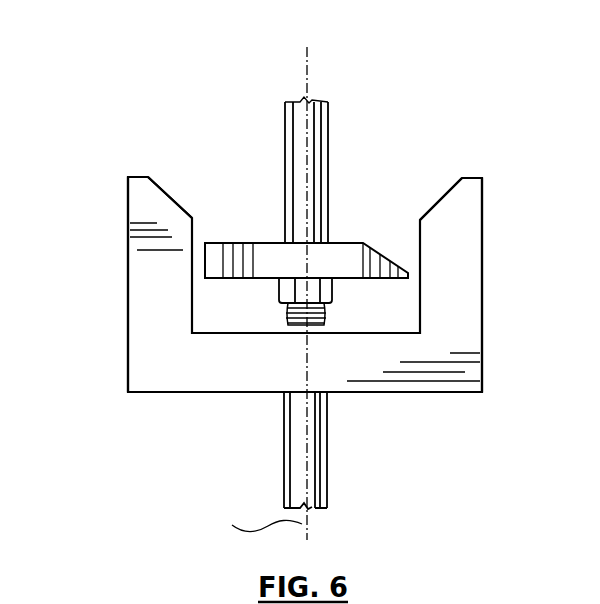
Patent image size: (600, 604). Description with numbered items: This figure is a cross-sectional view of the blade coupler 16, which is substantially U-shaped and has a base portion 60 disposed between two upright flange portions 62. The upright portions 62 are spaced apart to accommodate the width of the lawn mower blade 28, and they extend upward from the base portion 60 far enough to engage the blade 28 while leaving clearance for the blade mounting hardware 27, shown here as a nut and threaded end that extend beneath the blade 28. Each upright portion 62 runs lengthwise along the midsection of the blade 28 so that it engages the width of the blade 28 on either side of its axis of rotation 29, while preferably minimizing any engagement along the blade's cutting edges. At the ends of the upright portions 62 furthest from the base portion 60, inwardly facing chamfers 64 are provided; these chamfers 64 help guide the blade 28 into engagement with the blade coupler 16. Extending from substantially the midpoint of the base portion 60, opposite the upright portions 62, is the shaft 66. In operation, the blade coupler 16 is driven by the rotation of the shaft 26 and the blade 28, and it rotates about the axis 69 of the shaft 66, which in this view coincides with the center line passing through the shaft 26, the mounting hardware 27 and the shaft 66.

The blade coupler 16 is at (432, 375).
The shaft 26 is at (290, 120).
The blade mounting hardware 27 is at (290, 313).
The lawn mower blade 28 is at (352, 257).
The axis of rotation 29 is at (308, 66).
The base portion 60 is at (178, 393).
The upright flange portions 62 is at (128, 268).
The chamfers 64 is at (165, 191).
The shaft 66 is at (328, 450).
The axis 69 is at (264, 527).